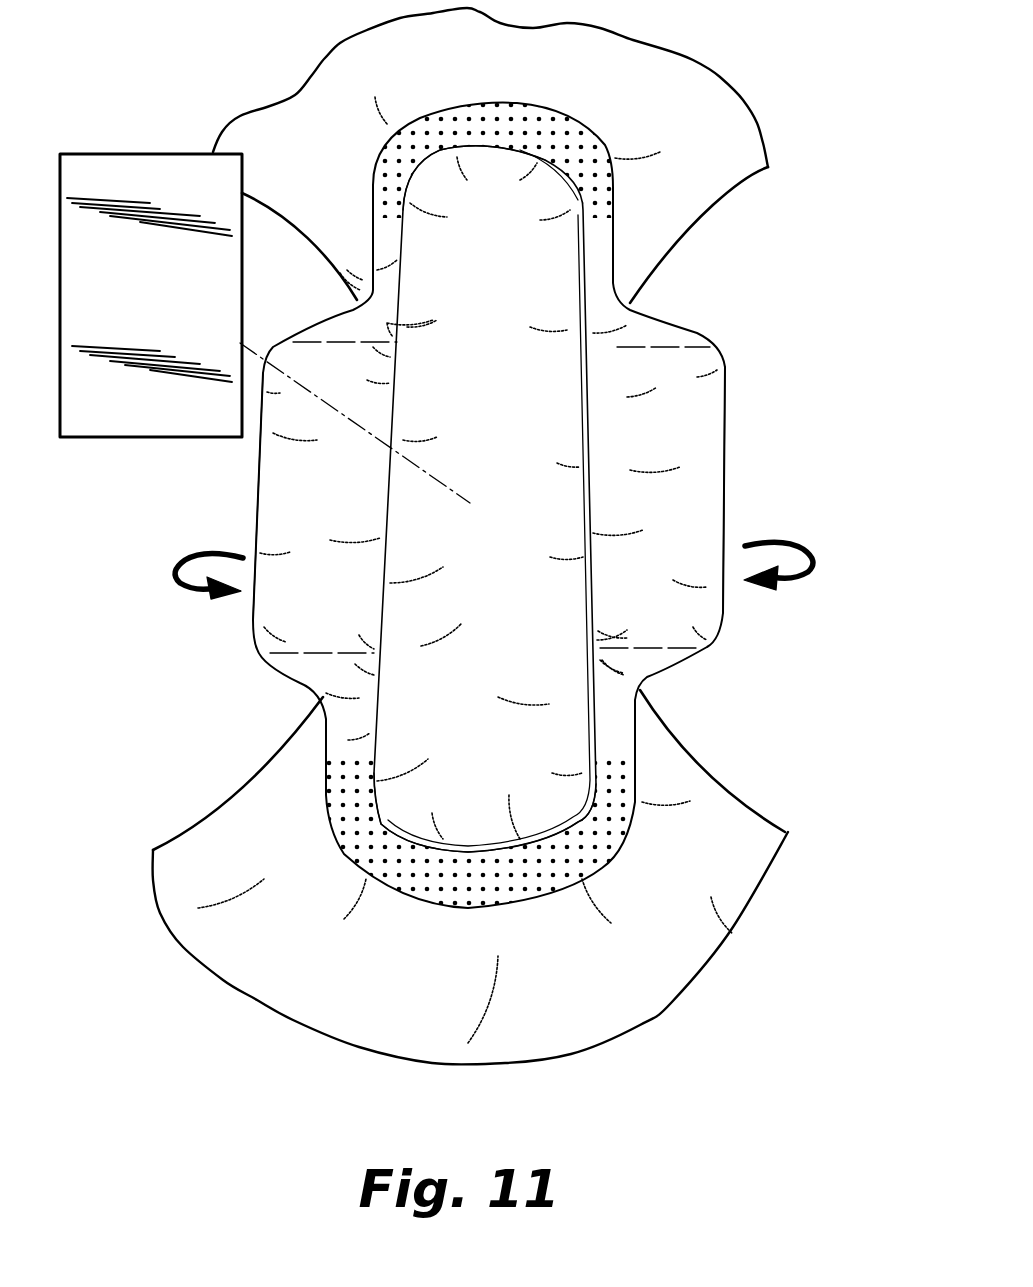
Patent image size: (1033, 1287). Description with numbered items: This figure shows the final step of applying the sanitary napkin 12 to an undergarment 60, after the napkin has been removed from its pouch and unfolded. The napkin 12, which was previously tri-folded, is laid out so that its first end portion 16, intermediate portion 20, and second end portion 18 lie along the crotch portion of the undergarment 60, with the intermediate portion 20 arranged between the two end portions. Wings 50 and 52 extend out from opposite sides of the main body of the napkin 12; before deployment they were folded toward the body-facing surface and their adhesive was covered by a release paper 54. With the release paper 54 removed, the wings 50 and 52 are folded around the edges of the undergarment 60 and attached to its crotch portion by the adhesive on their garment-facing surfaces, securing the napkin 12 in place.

The sanitary napkin 12 is at (606, 130).
The first end portion 16 is at (468, 806).
The second end portion 18 is at (447, 197).
The intermediate portion 20 is at (550, 490).
The wing 50 is at (277, 500).
The wing 52 is at (707, 472).
The release paper 54 is at (113, 150).
The undergarment 60 is at (322, 95).